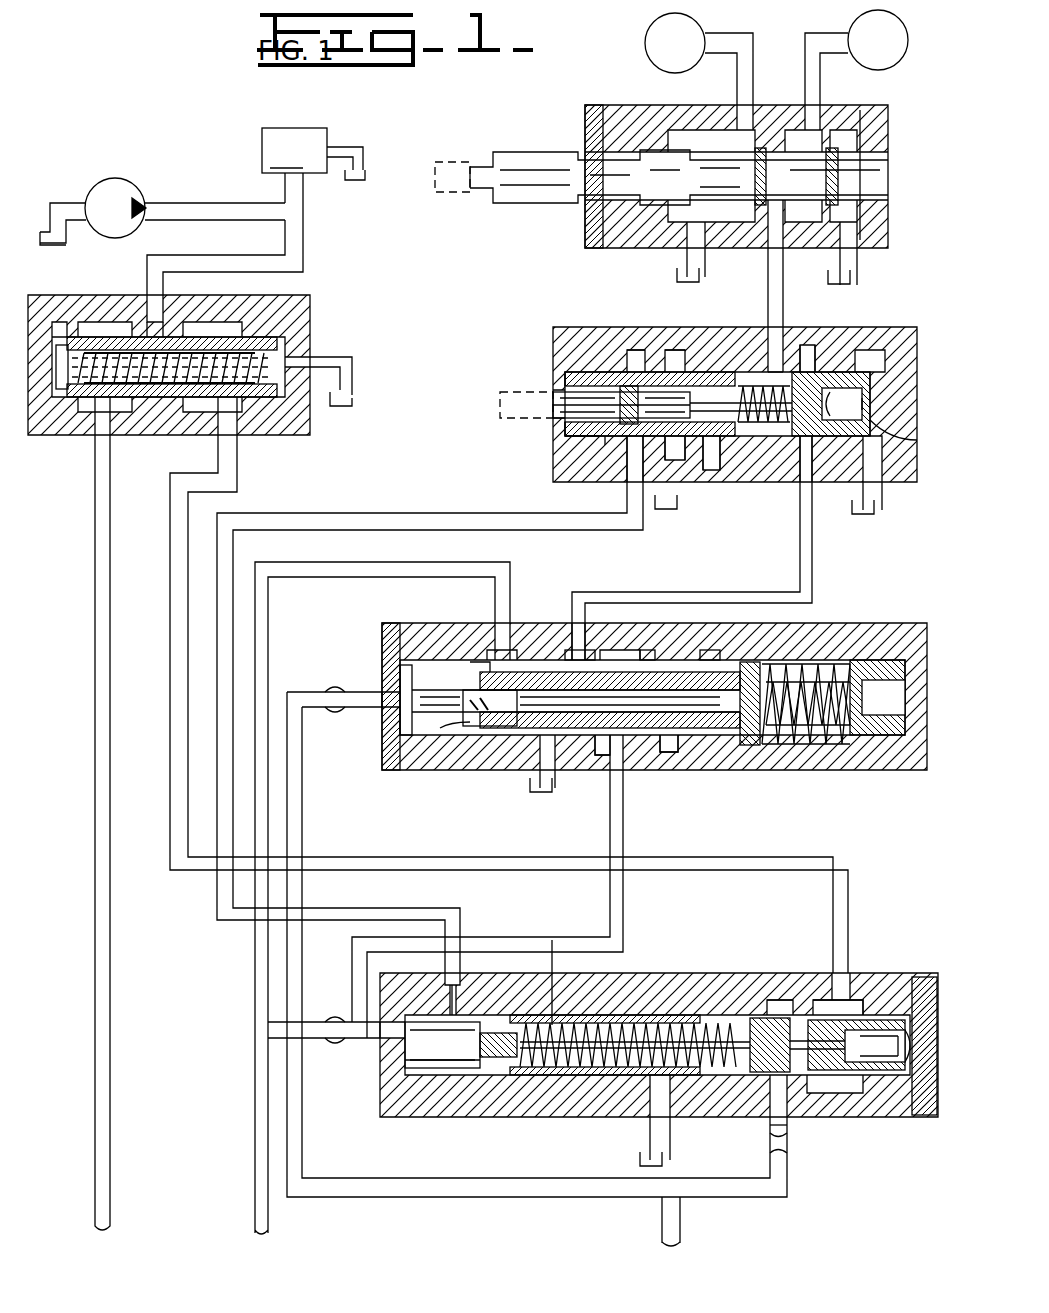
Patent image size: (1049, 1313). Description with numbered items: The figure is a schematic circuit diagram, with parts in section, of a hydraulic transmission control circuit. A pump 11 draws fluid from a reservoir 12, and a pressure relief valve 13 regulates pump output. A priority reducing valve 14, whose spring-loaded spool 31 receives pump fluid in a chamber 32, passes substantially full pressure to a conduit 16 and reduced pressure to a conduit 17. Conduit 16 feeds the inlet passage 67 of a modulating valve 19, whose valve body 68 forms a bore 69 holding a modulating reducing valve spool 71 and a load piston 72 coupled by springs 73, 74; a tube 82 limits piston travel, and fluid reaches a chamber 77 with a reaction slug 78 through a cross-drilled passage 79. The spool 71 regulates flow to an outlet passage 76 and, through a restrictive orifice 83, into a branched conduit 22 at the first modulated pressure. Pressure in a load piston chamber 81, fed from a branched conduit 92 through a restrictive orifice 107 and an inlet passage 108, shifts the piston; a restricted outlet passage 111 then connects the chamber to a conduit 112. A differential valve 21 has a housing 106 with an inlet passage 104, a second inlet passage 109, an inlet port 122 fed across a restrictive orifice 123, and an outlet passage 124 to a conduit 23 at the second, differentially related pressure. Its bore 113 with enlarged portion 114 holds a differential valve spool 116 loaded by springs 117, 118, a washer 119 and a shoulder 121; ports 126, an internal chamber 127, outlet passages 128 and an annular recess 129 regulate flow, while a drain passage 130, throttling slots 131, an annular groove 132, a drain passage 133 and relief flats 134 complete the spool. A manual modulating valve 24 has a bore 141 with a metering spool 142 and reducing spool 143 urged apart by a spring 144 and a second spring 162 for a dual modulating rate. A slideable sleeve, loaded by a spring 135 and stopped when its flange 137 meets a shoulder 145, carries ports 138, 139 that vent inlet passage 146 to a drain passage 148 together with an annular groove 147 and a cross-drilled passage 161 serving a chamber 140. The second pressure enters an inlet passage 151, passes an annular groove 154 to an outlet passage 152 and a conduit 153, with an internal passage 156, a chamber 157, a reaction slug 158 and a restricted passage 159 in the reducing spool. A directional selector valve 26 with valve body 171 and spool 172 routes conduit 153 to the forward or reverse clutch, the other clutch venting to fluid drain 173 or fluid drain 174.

The pump 11 is at (134, 194).
The reservoir 12 is at (62, 240).
The pressure relief valve 13 is at (256, 211).
The priority reducing valve 14 is at (205, 378).
The conduit 16 is at (170, 758).
The conduit 17 is at (105, 965).
The modulating valve 19 is at (662, 1033).
The differential valve 21 is at (635, 693).
The branched conduit 22 is at (585, 1200).
The conduit 23 is at (805, 595).
The manual modulating valve 24 is at (696, 418).
The directional selector valve 26 is at (680, 171).
The spring-loaded spool 31 is at (180, 400).
The chamber 32 is at (60, 405).
The inlet passage 67 is at (855, 1000).
The valve body 68 is at (670, 975).
The bore 69 is at (450, 1068).
The modulating reducing valve spool 71 is at (882, 1072).
The load piston 72 is at (482, 1033).
The spring 73 is at (553, 950).
The spring 74 is at (615, 1075).
The outlet passage 76 is at (770, 1128).
The chamber 77 is at (924, 1075).
The reaction slug 78 is at (912, 1030).
The cross-drilled passage 79 is at (828, 1055).
The load piston chamber 81 is at (442, 1046).
The tube 82 is at (575, 1075).
The restrictive orifice 83 is at (768, 1152).
The branched conduit 92 is at (262, 1030).
The inlet passage 104 is at (500, 622).
The housing 106 is at (403, 633).
The restrictive orifice 107 is at (340, 1022).
The inlet passage 108 is at (382, 1035).
The inlet passage 109 is at (605, 757).
The restricted outlet passage 111 is at (460, 1000).
The conduit 112 is at (435, 905).
The bore 113 is at (405, 740).
The enlarged portion 114 is at (857, 740).
The differential valve spool 116 is at (600, 655).
The spring 117 is at (775, 745).
The outer spring 118 is at (820, 745).
The washer 119 is at (750, 745).
The shoulder 121 is at (770, 662).
The inlet port 122 is at (395, 705).
The restrictive orifice 123 is at (333, 695).
The outlet passage 124 is at (570, 625).
The ports 126 is at (478, 672).
The internal chamber 127 is at (520, 712).
The outlet passages 128 is at (640, 672).
The annular recess 129 is at (455, 730).
The drain passage 130 is at (540, 780).
The throttling slots 131 is at (668, 752).
The annular groove 132 is at (690, 675).
The drain passage 133 is at (650, 785).
The relief flats 134 is at (465, 697).
The spring 135 is at (568, 425).
The flange 137 is at (575, 440).
The ports 138 is at (600, 372).
The ports 139 is at (660, 440).
The chamber 140 is at (700, 372).
The bore 141 is at (745, 386).
The metering spool 142 is at (495, 398).
The reducing spool 143 is at (895, 445).
The spring 144 is at (760, 425).
The shoulder 145 is at (610, 470).
The inlet passage 146 is at (628, 480).
The annular groove 147 is at (640, 372).
The drain passage 148 is at (672, 462).
The inlet passage 151 is at (850, 480).
The outlet passage 152 is at (780, 325).
The conduit 153 is at (772, 315).
The annular groove 154 is at (803, 436).
The internal passage 156 is at (830, 372).
The chamber 157 is at (865, 395).
The reaction slug 158 is at (862, 404).
The restricted passage 159 is at (808, 345).
The cross-drilled passage 161 is at (708, 470).
The second spring 162 is at (735, 436).
The valve body 171 is at (875, 128).
The spool 172 is at (660, 178).
The fluid drain 173 is at (685, 258).
The fluid drain 174 is at (865, 255).